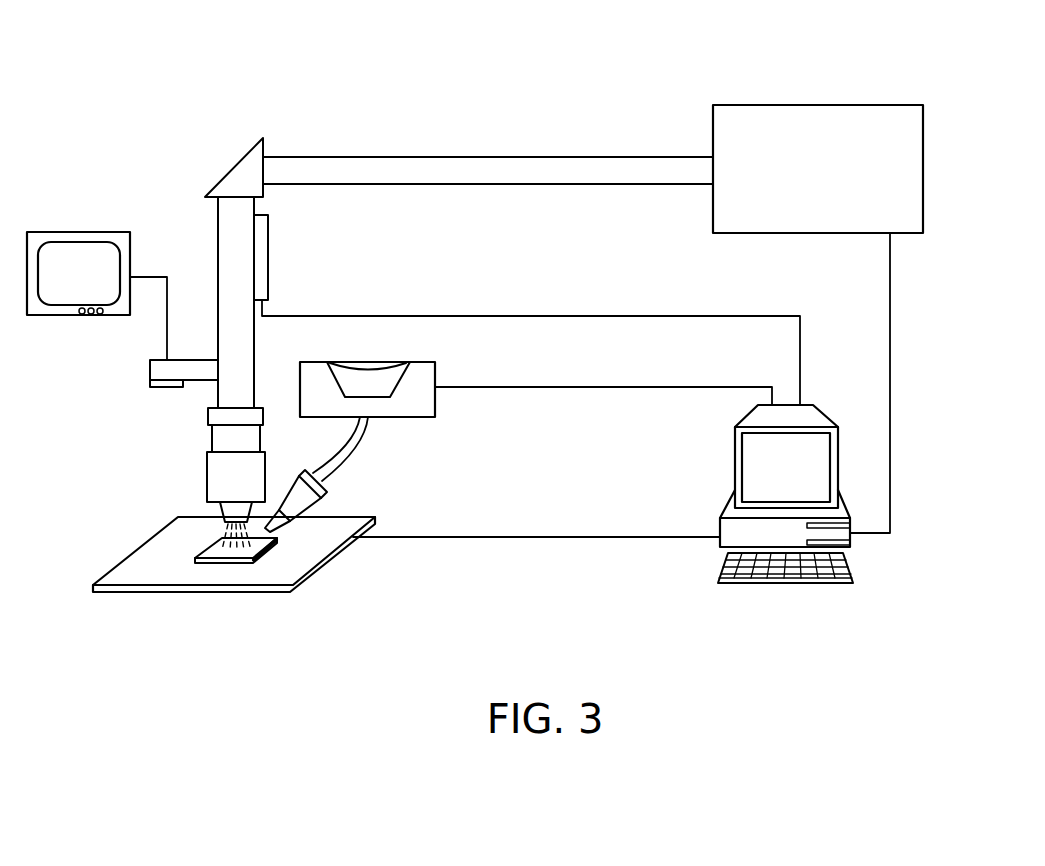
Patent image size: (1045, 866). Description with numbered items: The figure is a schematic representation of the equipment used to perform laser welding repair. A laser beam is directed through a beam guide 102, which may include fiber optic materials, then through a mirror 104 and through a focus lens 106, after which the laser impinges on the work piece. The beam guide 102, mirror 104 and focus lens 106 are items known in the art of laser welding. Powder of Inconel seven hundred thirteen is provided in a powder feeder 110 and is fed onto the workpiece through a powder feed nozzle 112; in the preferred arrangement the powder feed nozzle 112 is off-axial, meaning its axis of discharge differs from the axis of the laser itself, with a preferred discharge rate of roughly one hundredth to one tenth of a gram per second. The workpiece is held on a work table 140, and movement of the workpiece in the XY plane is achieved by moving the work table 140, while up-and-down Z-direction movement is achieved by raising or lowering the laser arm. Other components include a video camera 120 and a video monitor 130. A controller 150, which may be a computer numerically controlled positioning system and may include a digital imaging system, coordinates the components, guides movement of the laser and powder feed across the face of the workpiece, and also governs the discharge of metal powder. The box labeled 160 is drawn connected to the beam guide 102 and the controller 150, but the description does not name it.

The beam guide 102 is at (478, 165).
The mirror 104 is at (240, 165).
The focus lens 106 is at (207, 470).
The powder feeder 110 is at (427, 414).
The powder feed nozzle 112 is at (317, 493).
The video camera 120 is at (147, 397).
The video monitor 130 is at (50, 233).
The work table 140 is at (205, 592).
The controller 150 is at (768, 578).
The laser source 160 is at (818, 116).